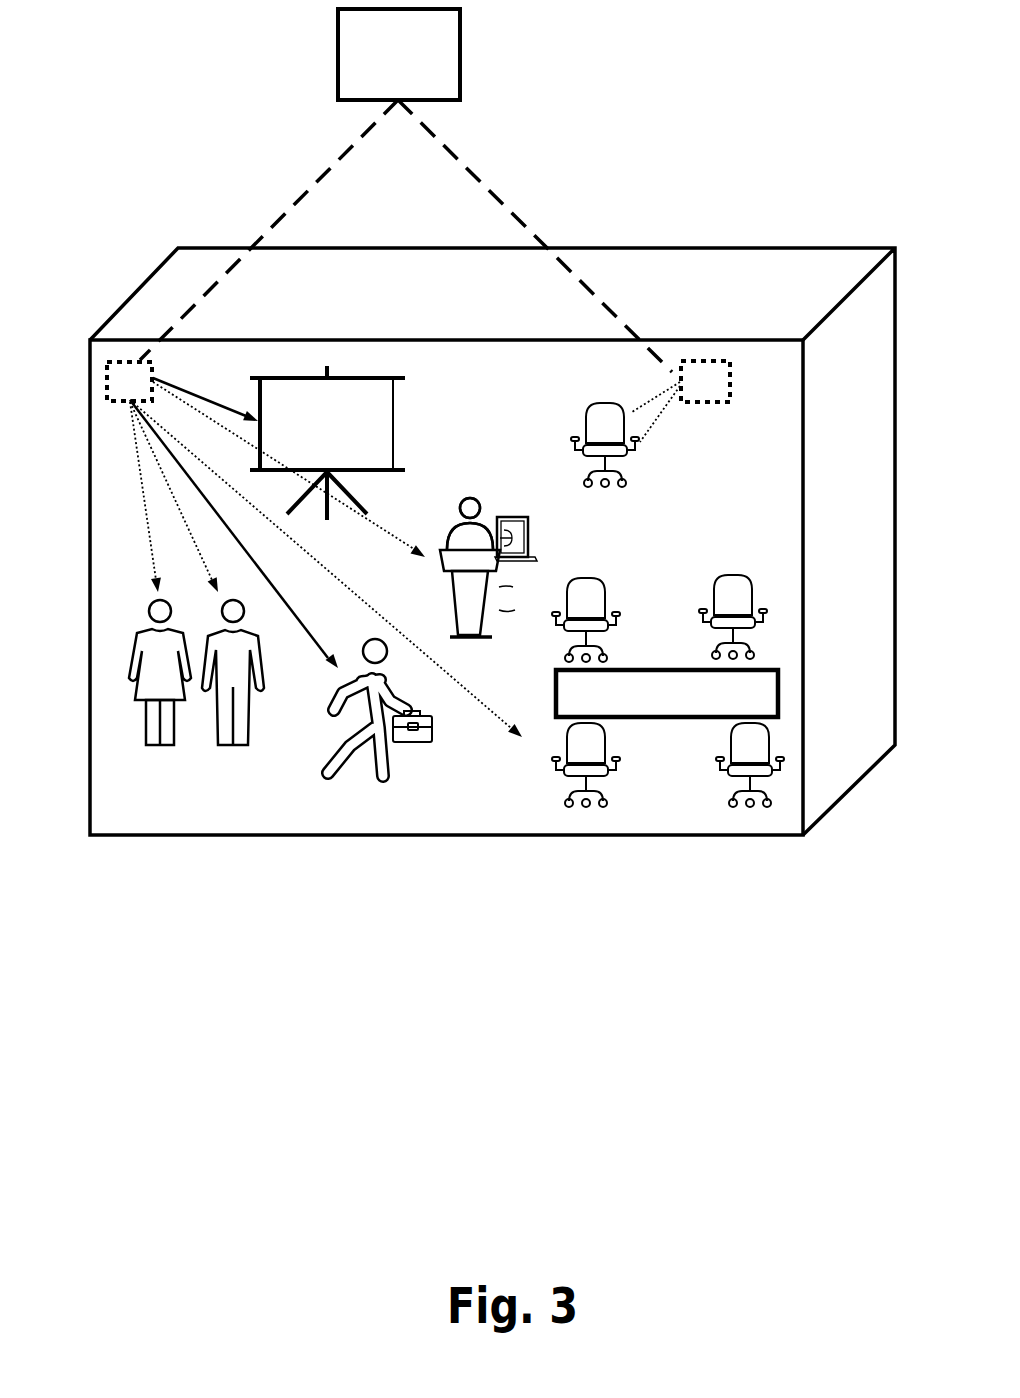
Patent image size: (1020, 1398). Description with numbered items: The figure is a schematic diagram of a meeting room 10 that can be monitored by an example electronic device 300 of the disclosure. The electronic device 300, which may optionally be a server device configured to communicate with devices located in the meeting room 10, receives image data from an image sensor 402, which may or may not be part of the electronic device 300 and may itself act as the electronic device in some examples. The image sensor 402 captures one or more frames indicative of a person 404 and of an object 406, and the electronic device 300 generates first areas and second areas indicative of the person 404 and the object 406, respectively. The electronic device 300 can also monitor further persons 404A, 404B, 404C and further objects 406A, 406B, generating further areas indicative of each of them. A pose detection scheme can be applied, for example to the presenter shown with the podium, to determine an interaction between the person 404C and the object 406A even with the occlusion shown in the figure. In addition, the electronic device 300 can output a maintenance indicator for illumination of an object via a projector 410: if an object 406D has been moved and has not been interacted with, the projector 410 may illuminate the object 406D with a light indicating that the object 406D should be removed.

The meeting room 10 is at (170, 234).
The electronic device 300 is at (406, 190).
The image sensor 402 is at (125, 348).
The object 406 is at (348, 368).
The object 406D is at (603, 385).
The projector 410 is at (705, 347).
The further object 406A is at (498, 480).
The further person 404C is at (512, 457).
The further person 404A is at (152, 774).
The further person 404B is at (228, 774).
The person 404 is at (356, 798).
The further object 406B is at (581, 824).